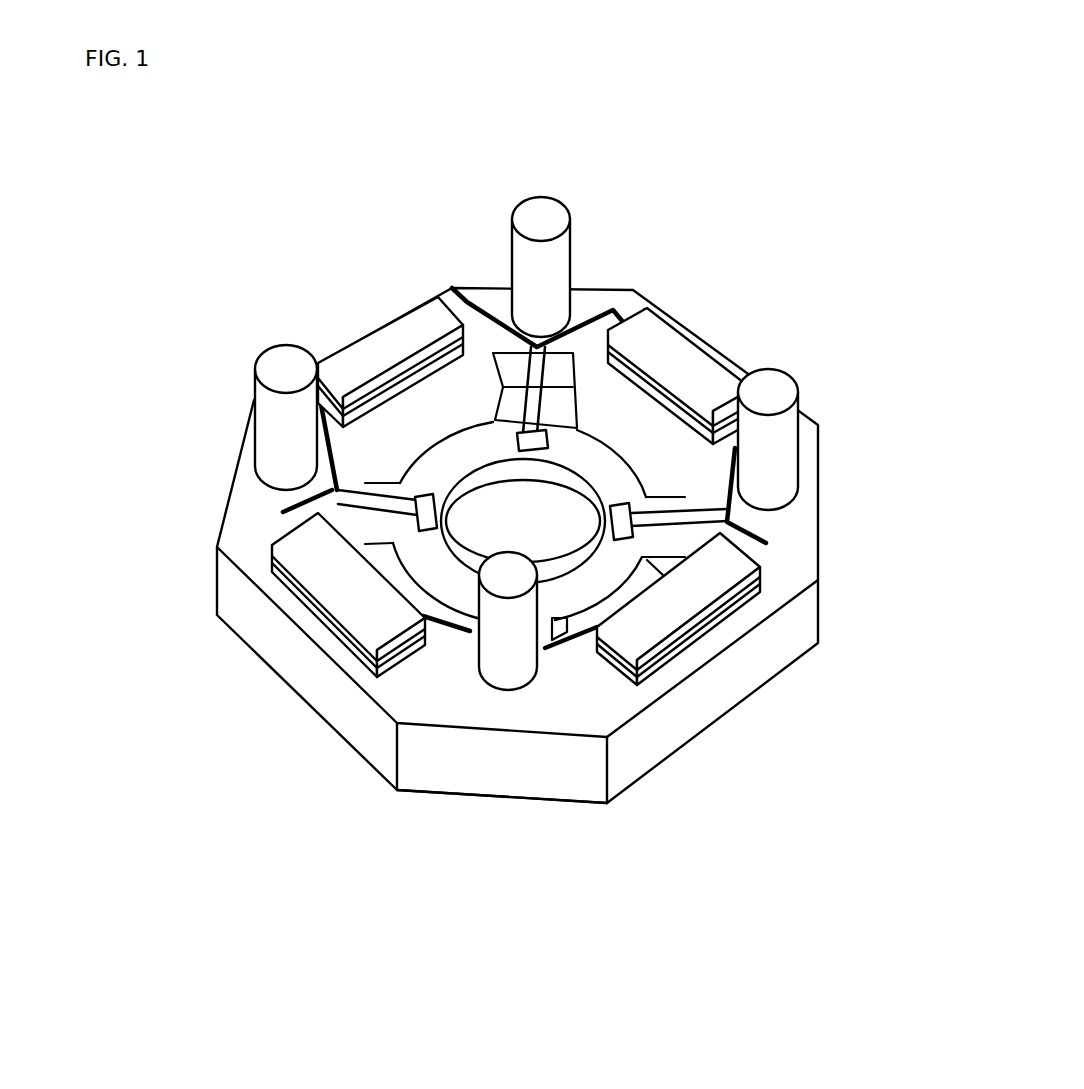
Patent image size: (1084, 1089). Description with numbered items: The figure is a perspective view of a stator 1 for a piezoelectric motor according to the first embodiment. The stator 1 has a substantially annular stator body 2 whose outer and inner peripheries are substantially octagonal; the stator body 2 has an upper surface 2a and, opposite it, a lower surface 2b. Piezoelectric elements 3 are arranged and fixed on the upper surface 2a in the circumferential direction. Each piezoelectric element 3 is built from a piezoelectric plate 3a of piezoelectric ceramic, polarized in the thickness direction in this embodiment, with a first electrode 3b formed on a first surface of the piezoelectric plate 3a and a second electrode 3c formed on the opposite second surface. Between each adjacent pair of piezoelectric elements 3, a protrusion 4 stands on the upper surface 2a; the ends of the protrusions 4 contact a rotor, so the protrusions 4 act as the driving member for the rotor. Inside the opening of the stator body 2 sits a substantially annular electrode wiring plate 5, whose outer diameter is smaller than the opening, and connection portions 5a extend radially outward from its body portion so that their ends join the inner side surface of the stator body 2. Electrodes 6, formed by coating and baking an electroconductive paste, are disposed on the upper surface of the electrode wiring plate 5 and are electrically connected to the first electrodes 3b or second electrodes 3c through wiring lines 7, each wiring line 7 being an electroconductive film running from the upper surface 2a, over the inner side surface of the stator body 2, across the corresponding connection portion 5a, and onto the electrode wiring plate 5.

The stator 1 is at (280, 272).
The stator body 2 is at (348, 760).
The upper surface 2a is at (458, 708).
The lower surface 2b is at (537, 804).
The piezoelectric element 3 is at (380, 326).
The piezoelectric plate 3a is at (340, 625).
The first electrode 3b is at (330, 573).
The second electrode 3c is at (355, 648).
The protrusion 4 is at (548, 198).
The electrode wiring plate 5 is at (628, 452).
The connection portion 5a is at (480, 400).
The electrode 6 is at (550, 441).
The wiring line 7 is at (470, 300).